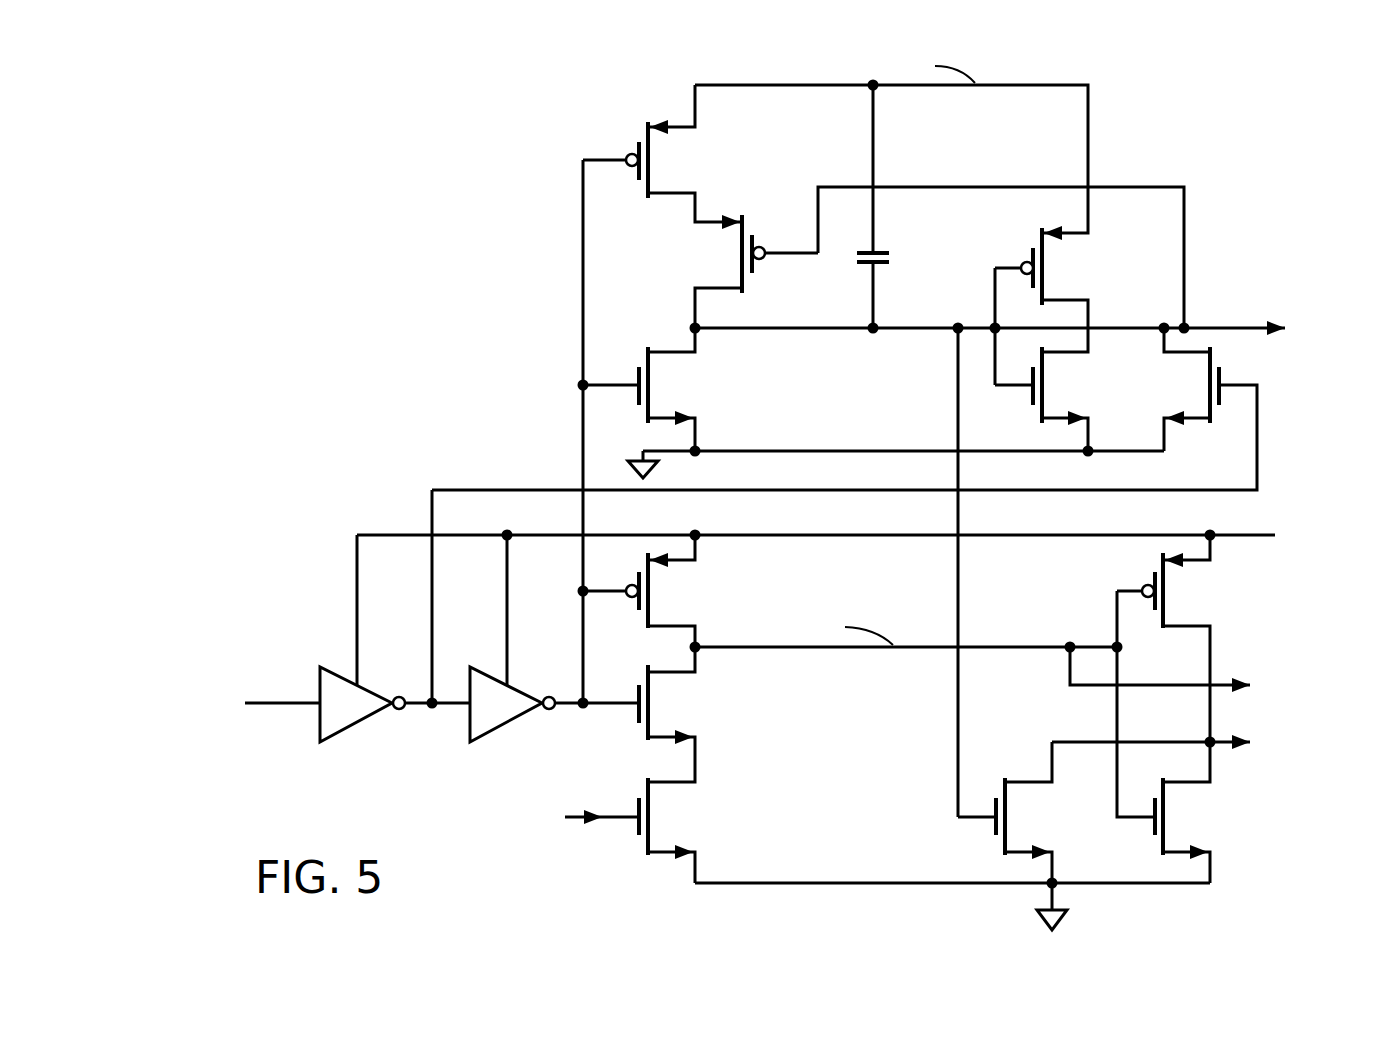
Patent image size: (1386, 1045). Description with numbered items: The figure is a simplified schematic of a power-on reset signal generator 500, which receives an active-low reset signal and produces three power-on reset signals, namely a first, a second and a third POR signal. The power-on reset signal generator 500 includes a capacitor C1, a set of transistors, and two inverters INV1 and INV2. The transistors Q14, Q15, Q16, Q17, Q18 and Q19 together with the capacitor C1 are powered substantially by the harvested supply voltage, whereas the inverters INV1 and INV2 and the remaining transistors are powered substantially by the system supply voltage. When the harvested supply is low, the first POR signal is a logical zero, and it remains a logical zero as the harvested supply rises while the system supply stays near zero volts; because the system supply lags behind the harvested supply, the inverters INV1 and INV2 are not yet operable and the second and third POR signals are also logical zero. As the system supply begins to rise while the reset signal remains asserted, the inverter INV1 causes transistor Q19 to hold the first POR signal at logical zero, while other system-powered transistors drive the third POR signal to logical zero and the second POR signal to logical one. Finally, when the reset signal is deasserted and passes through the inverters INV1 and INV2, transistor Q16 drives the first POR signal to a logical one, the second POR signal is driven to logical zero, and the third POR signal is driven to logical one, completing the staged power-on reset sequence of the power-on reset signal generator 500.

The power-on reset signal generator 500 is at (440, 96).
The transistor Q14 is at (900, 502).
The transistor Q15 is at (750, 271).
The transistor Q16 is at (1046, 306).
The transistor Q17 is at (641, 389).
The transistor Q18 is at (1046, 389).
The transistor Q19 is at (1184, 389).
The capacitor C1 is at (890, 206).
The inverter INV1 is at (362, 725).
The inverter INV2 is at (512, 725).